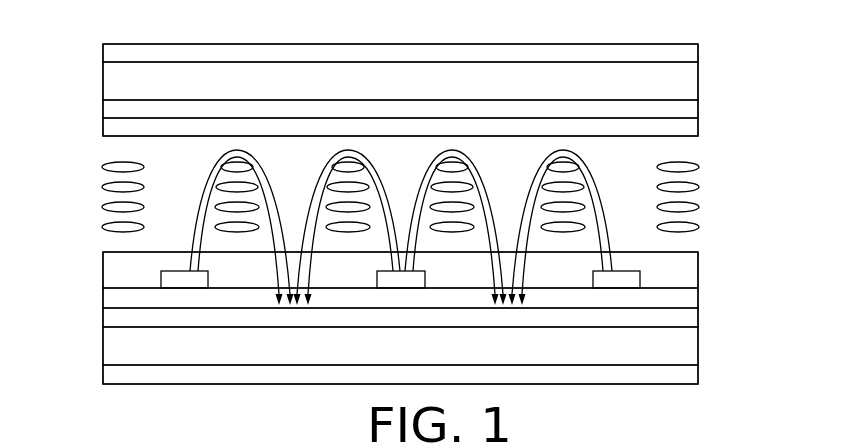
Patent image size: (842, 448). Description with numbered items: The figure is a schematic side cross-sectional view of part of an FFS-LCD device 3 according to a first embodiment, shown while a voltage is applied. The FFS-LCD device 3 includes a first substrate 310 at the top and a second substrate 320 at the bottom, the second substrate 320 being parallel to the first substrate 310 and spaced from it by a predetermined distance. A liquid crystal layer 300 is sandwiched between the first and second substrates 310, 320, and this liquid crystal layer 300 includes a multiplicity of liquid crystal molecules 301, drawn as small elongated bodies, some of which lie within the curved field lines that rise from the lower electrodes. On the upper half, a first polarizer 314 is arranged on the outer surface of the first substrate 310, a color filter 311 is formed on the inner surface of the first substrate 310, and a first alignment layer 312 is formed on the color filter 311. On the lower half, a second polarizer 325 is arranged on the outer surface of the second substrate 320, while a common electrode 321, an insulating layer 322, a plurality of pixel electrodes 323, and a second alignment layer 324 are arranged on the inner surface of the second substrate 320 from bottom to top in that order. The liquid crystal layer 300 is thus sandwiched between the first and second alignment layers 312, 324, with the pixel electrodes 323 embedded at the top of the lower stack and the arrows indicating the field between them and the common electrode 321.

The FFS-LCD device 3 is at (375, 38).
The first polarizer 314 is at (688, 53).
The first substrate 310 is at (687, 82).
The color filter 311 is at (687, 112).
The first alignment layer 312 is at (688, 128).
The liquid crystal layer 300 is at (703, 159).
The liquid crystal molecule 301 is at (120, 165).
The pixel electrode 323 is at (625, 281).
The second alignment layer 324 is at (682, 275).
The insulating layer 322 is at (687, 300).
The common electrode 321 is at (687, 318).
The second substrate 320 is at (677, 340).
The second polarizer 325 is at (682, 375).